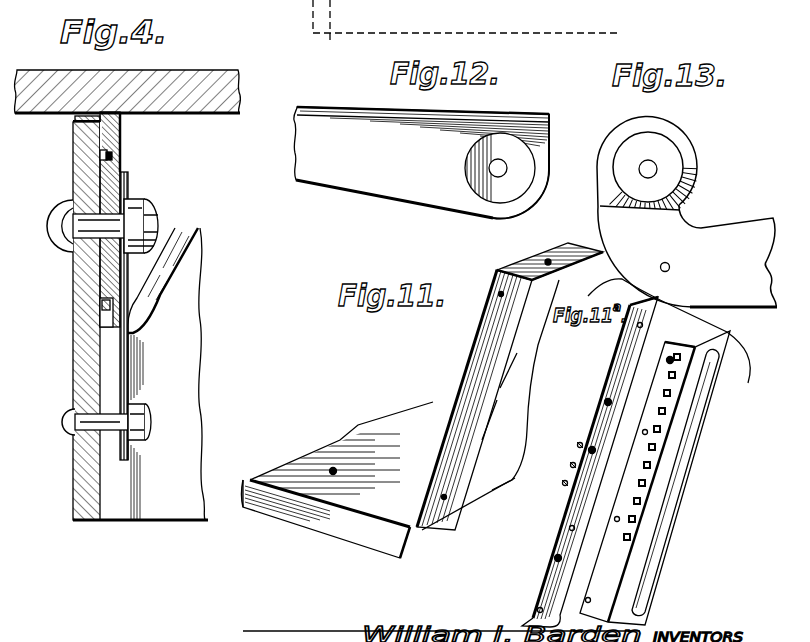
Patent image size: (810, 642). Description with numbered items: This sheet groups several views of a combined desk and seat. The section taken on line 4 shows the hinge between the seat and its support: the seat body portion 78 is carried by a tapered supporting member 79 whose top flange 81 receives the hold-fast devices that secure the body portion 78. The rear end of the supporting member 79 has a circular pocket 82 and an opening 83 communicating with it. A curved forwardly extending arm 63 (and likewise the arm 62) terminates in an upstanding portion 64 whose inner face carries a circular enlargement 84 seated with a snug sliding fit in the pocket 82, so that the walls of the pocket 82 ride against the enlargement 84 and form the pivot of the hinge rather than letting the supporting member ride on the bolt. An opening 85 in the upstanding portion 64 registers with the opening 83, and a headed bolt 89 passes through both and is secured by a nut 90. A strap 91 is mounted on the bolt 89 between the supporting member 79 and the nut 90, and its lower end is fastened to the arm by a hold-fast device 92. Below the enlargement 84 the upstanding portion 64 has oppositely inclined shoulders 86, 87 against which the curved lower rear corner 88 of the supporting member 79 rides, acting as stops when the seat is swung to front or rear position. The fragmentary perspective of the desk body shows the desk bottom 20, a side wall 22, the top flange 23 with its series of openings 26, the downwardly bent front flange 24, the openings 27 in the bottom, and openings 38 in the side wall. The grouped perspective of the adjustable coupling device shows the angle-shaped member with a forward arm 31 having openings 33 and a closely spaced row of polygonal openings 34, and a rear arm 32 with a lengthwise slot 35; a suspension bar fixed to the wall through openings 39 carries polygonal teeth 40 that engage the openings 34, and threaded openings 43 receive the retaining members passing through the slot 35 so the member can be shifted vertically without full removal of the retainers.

In FIG. 4, the section line 4 is at (349, 42).
In FIG. 11, the desk bottom 20 is at (360, 424).
In FIG. 11, the side wall 22 is at (472, 385).
In FIG. 11A, the flange 23 is at (621, 383).
In FIG. 11, the flange 24 is at (310, 515).
In FIG. 11, the openings 26 is at (547, 260).
In FIG. 11, the openings 27 is at (338, 472).
In FIG. 11A, the forward arm 31 is at (608, 614).
In FIG. 11A, the rear arm 32 is at (650, 585).
In FIG. 11A, the openings 33 is at (667, 359).
In FIG. 11A, the polygonal-shaped openings 34 is at (663, 416).
In FIG. 11A, the slot 35 is at (645, 553).
In FIG. 11, the openings 38 is at (503, 296).
In FIG. 11A, the openings 39 is at (637, 325).
In FIG. 11A, the polygonal-shaped teeth 40 is at (577, 445).
In FIG. 11A, the openings 43 is at (606, 401).
In FIG. 13, the arm 62 is at (687, 237).
In FIG. 4, the arm 63 is at (195, 300).
In FIG. 4, the upstanding portion 64 is at (83, 157).
In FIG. 13, the upstanding portion 64 is at (690, 150).
In FIG. 4, the body portion 78 is at (212, 62).
In FIG. 4, the supporting member 79 is at (112, 135).
In FIG. 12, the supporting member 79 is at (421, 163).
In FIG. 4, the flange 81 is at (75, 118).
In FIG. 12, the flange 81 is at (381, 110).
In FIG. 4, the circular pocket 82 is at (103, 150).
In FIG. 12, the circular pocket 82 is at (523, 167).
In FIG. 4, the opening 83 is at (128, 192).
In FIG. 12, the opening 83 is at (503, 174).
In FIG. 4, the circular enlargement 84 is at (113, 156).
In FIG. 13, the circular enlargement 84 is at (675, 167).
In FIG. 13, the opening 85 is at (660, 155).
In FIG. 13, the inclined shoulder 86 is at (628, 211).
In FIG. 4, the inclined shoulder 87 is at (123, 322).
In FIG. 13, the inclined shoulder 87 is at (670, 213).
In FIG. 4, the curved lower rear corner 88 is at (143, 320).
In FIG. 12, the curved lower rear corner 88 is at (537, 204).
In FIG. 4, the headed bolt 89 is at (83, 220).
In FIG. 4, the securing nut 90 is at (135, 208).
In FIG. 4, the strap 91 is at (128, 360).
In FIG. 4, the hold-fast device 92 is at (83, 418).